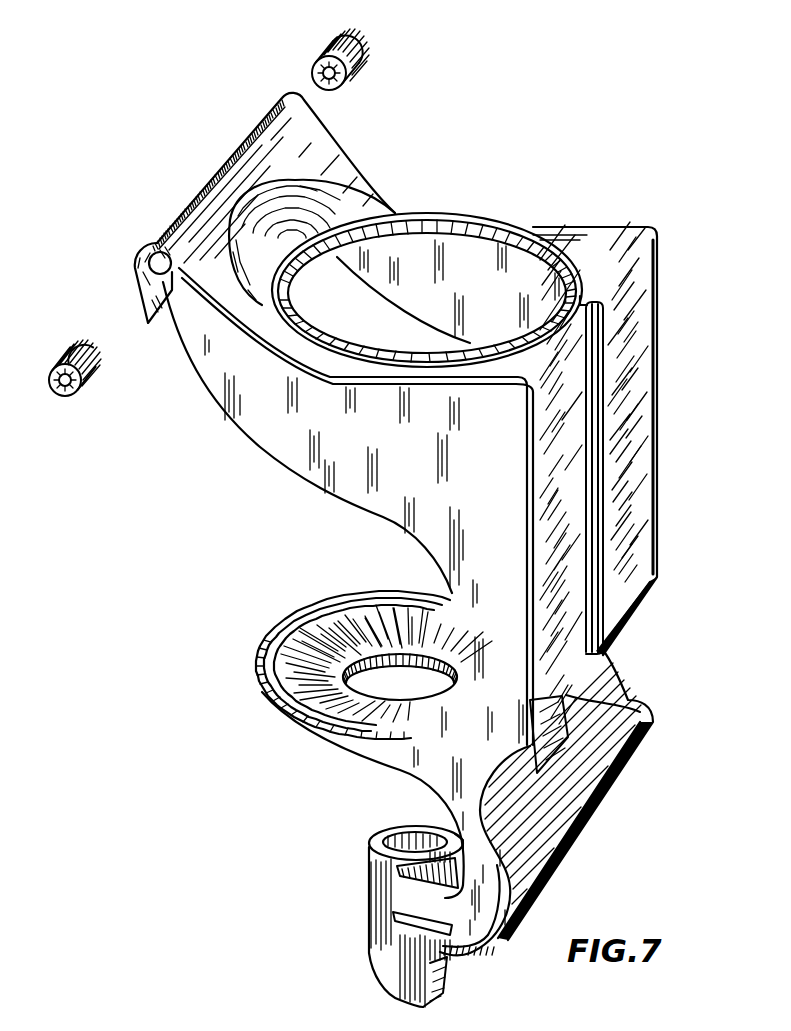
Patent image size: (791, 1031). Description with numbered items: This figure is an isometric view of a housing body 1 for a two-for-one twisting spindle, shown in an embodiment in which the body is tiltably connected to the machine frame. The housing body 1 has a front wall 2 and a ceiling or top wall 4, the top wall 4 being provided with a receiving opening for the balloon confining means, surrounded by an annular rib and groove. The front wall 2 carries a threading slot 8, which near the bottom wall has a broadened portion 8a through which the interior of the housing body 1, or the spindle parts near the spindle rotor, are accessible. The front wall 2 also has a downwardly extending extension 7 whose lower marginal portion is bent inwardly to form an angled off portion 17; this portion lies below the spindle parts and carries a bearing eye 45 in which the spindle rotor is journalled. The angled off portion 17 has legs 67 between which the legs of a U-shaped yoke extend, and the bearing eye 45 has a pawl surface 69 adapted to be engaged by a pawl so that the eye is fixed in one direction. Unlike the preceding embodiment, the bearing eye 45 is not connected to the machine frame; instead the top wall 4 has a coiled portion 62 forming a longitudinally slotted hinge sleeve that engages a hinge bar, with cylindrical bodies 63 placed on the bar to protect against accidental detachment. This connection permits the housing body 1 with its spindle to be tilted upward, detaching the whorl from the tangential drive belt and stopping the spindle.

The housing body 1 is at (417, 559).
The front wall 2 is at (641, 470).
The top wall 4 is at (357, 188).
The extension 7 is at (630, 715).
The threading slot 8 is at (597, 397).
The broadened portion 8a is at (563, 710).
The angled off portion 17 is at (490, 920).
The bearing eye 45 is at (390, 960).
The coiled portion 62 is at (235, 175).
The cylindrical bodies 63 is at (324, 42).
The legs 67 is at (457, 840).
The pawl surface 69 is at (445, 993).